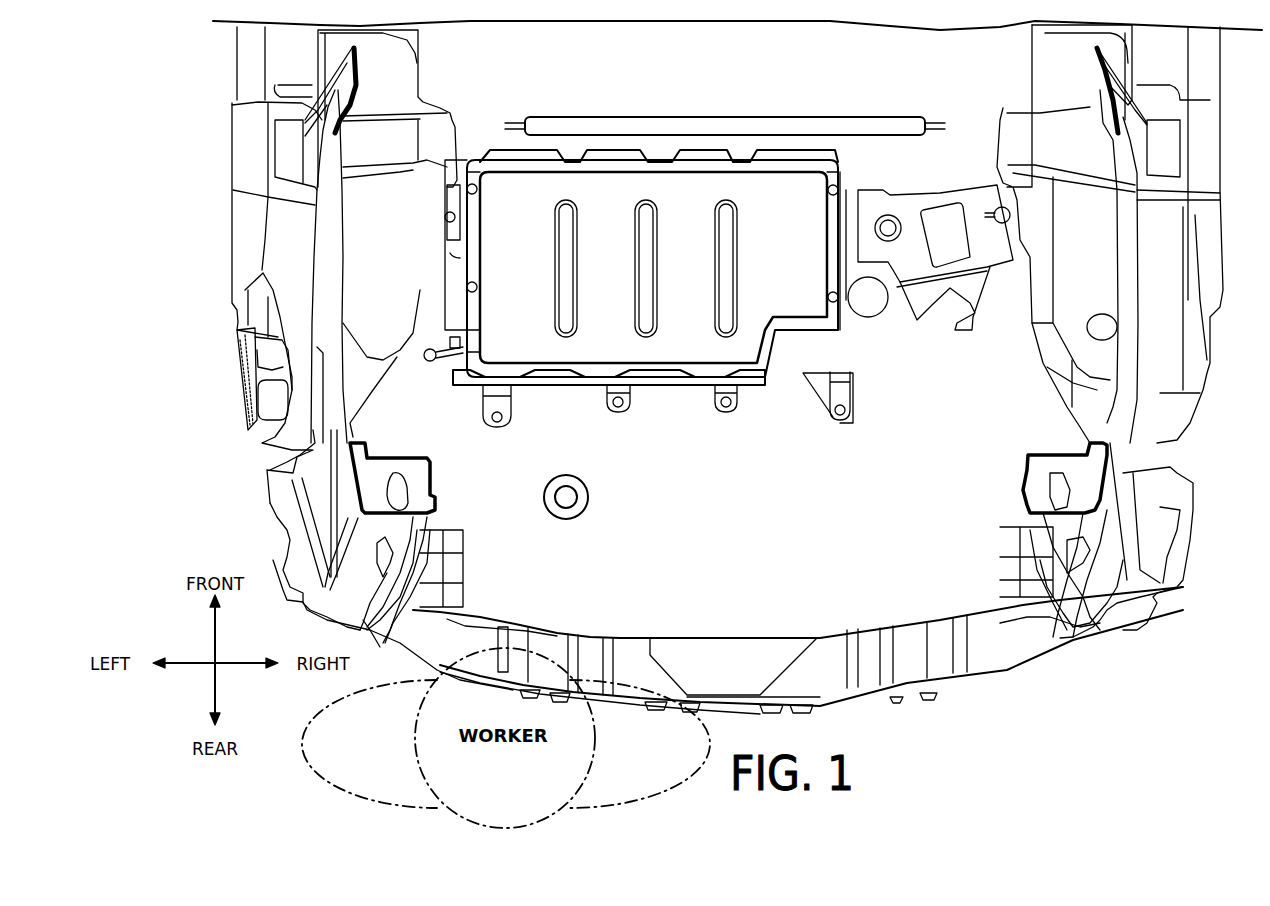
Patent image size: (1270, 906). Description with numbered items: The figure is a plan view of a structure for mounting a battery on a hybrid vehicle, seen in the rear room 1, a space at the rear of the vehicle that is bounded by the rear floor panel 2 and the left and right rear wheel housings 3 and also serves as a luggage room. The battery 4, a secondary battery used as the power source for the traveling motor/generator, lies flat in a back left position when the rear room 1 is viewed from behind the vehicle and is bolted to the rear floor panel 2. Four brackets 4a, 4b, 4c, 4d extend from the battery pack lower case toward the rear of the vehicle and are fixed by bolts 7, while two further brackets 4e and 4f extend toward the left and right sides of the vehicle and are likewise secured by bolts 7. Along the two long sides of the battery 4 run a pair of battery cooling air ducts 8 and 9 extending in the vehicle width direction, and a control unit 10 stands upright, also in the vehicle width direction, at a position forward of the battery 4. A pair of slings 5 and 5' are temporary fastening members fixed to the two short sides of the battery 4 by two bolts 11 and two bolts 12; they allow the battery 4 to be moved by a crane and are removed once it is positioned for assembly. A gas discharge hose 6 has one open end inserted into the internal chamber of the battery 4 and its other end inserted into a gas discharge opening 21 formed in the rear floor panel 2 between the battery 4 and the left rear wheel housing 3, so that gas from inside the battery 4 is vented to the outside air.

The rear room 1 is at (730, 572).
The rear floor panel 2 is at (953, 580).
The rear wheel housing 3 is at (362, 302).
The battery 4 is at (748, 318).
The bracket 4a is at (512, 407).
The bracket 4b is at (627, 400).
The bracket 4c is at (733, 402).
The bracket 4d is at (850, 412).
The bracket 4e is at (448, 193).
The bracket 4f is at (865, 197).
The sling 5 is at (644, 268).
The sling 5' is at (808, 251).
The gas discharge hose 6 is at (452, 350).
The bolt 7 is at (445, 218).
The battery cooling air duct 8 is at (585, 397).
The battery cooling air duct 9 is at (612, 140).
The control unit 10 is at (733, 148).
The bolt 11 is at (478, 188).
The bolt 12 is at (828, 190).
The gas discharge opening 21 is at (425, 355).